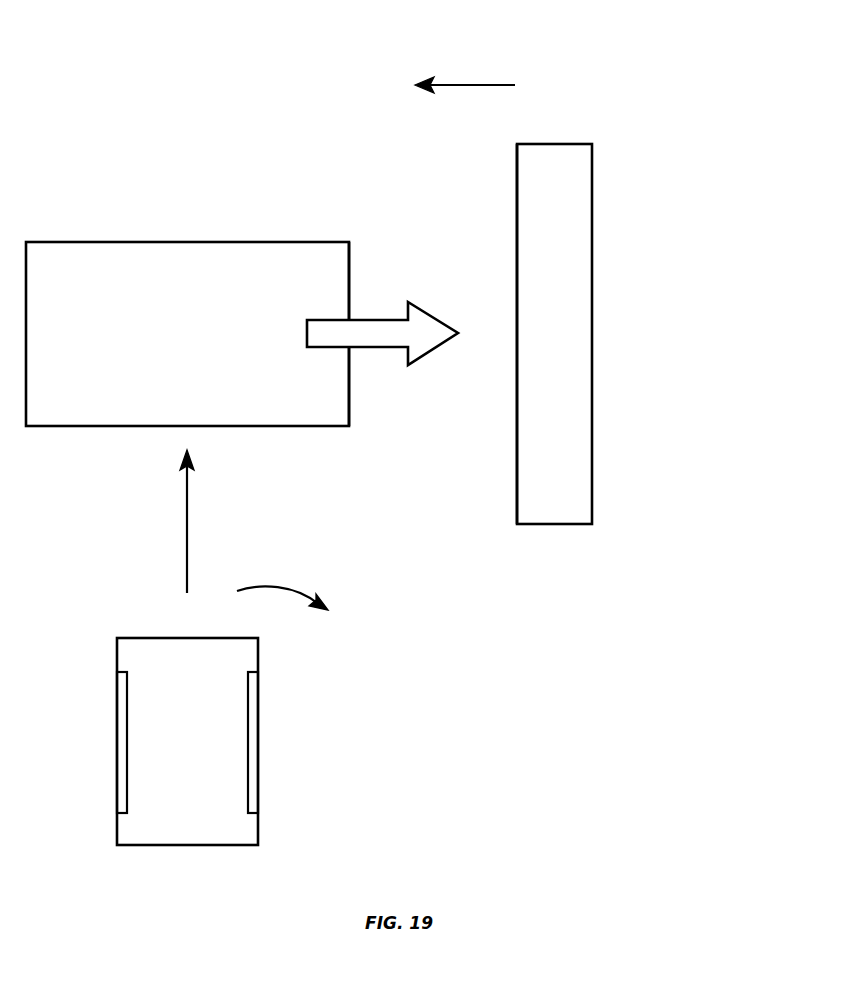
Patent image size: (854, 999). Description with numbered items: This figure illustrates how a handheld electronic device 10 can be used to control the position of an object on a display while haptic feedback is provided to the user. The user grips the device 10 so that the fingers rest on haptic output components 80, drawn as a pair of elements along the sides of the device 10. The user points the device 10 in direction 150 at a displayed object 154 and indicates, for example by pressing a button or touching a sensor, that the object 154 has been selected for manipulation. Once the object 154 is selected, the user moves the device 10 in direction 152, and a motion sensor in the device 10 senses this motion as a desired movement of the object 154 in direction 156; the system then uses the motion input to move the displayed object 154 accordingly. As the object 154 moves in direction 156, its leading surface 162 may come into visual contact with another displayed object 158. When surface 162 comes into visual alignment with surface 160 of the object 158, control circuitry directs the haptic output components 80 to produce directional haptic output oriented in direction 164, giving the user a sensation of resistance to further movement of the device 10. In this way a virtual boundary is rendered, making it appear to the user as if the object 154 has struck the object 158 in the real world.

The device 10 is at (187, 786).
The haptic output components 80 is at (248, 742).
The pointing direction 150 is at (187, 527).
The device movement direction 152 is at (280, 586).
The displayed object 154 is at (166, 242).
The object movement direction 156 is at (376, 320).
The another displayed object 158 is at (620, 253).
The surface of object 158 160 is at (517, 478).
The leading surface 162 is at (352, 397).
The haptic feedback direction 164 is at (467, 85).